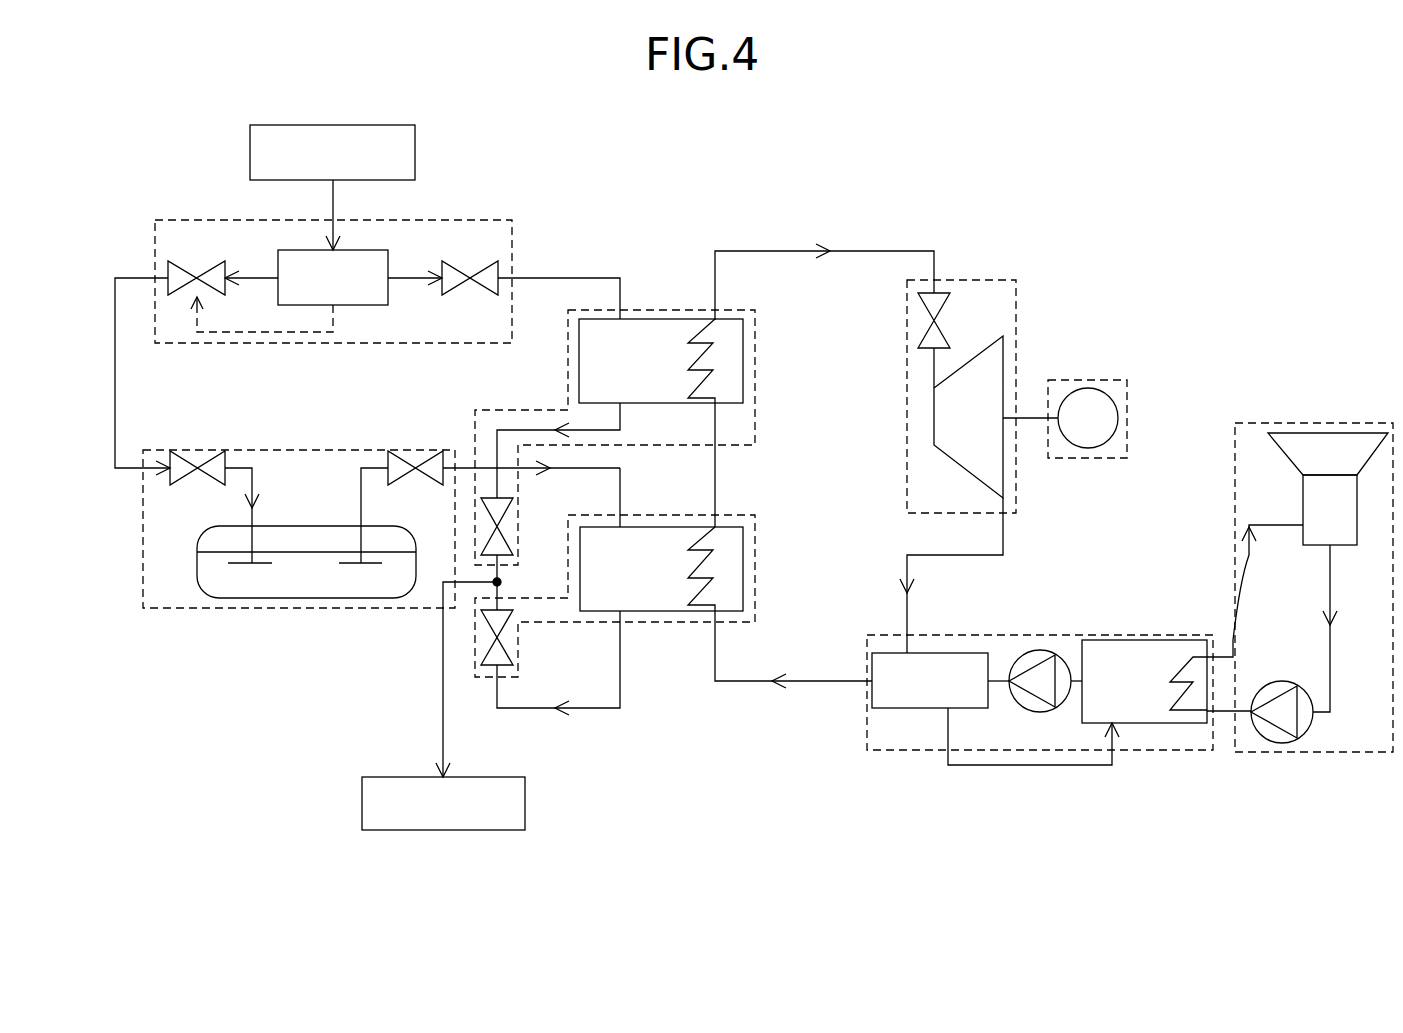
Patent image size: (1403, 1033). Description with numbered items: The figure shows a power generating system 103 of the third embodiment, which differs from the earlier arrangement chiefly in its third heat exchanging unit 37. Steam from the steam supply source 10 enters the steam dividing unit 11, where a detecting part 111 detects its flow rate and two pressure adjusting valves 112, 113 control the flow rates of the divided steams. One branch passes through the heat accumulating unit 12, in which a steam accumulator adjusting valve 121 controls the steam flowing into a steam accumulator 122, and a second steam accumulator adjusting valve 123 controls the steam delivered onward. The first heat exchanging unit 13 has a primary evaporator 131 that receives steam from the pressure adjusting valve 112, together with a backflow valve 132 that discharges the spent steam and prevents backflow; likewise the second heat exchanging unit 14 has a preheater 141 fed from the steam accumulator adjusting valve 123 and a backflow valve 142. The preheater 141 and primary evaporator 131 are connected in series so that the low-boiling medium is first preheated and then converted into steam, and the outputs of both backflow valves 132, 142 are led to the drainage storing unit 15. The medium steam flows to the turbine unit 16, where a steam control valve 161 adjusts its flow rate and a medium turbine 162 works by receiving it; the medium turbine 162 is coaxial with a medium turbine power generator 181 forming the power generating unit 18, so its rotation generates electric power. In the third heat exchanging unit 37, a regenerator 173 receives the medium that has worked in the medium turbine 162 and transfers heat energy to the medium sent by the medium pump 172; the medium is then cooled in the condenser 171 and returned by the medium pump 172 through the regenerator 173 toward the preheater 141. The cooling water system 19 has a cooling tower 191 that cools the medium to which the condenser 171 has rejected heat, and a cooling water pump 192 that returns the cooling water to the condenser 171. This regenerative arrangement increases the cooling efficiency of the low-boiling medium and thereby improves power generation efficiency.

The steam supply source 10 is at (415, 152).
The steam dividing unit 11 is at (563, 204).
The detecting part 111 is at (388, 258).
The pressure adjusting valve 112 is at (498, 270).
The pressure adjusting valve 113 is at (168, 262).
The heat accumulating unit 12 is at (133, 637).
The steam accumulator adjusting valve 121 is at (220, 455).
The steam accumulator 122 is at (340, 598).
The steam accumulator adjusting valve 123 is at (390, 455).
The first heat exchanging unit 13 is at (670, 301).
The primary evaporator 131 is at (743, 352).
The backflow valve 132 is at (513, 500).
The second heat exchanging unit 14 is at (680, 513).
The preheater 141 is at (743, 568).
The backflow valve 142 is at (513, 662).
The drainage storing unit 15 is at (525, 803).
The turbine unit 16 is at (1002, 276).
The steam control valve 161 is at (919, 352).
The medium turbine 162 is at (934, 445).
The power generating unit 18 is at (1153, 404).
The medium turbine power generator 181 is at (1082, 388).
The third heat exchanging unit 37 is at (1105, 626).
The condenser 171 is at (1168, 640).
The medium pump 172 is at (1035, 652).
The regenerator 173 is at (945, 653).
The cooling water system 19 is at (1382, 419).
The cooling tower 191 is at (1303, 490).
The cooling water pump 192 is at (1282, 682).
The power generating system 103 is at (818, 806).